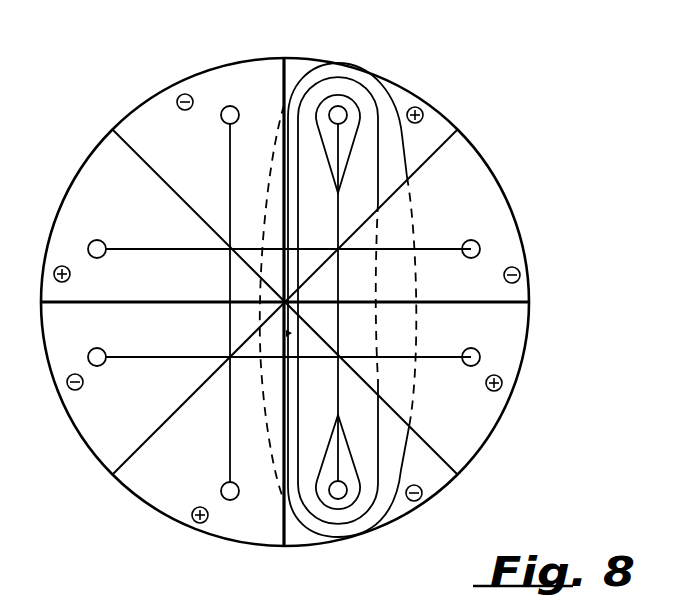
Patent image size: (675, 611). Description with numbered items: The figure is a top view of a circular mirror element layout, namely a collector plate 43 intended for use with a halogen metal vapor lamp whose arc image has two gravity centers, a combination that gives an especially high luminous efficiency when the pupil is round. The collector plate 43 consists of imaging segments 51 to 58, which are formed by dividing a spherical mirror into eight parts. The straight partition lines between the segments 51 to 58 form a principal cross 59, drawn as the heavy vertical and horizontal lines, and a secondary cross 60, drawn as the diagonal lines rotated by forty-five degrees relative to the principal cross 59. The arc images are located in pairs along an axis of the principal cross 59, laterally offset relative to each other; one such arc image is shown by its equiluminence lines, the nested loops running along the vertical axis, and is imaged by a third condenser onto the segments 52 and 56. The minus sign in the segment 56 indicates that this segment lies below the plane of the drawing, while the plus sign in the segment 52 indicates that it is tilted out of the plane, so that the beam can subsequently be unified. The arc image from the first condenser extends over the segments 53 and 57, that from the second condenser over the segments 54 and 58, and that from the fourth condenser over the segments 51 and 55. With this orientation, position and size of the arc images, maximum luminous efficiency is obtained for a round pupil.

The collector plate 43 is at (124, 498).
The imaging segment 51 is at (223, 527).
The imaging segment 52 is at (397, 97).
The imaging segment 53 is at (92, 196).
The imaging segment 54 is at (482, 423).
The imaging segment 55 is at (156, 117).
The imaging segment 56 is at (435, 485).
The imaging segment 57 is at (473, 183).
The imaging segment 58 is at (89, 425).
The principal cross 59 is at (287, 76).
The secondary cross 60 is at (179, 199).